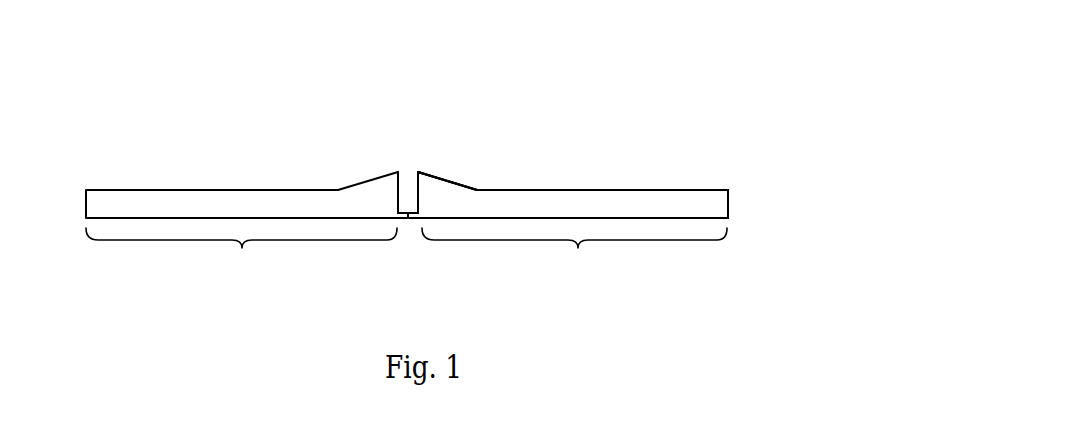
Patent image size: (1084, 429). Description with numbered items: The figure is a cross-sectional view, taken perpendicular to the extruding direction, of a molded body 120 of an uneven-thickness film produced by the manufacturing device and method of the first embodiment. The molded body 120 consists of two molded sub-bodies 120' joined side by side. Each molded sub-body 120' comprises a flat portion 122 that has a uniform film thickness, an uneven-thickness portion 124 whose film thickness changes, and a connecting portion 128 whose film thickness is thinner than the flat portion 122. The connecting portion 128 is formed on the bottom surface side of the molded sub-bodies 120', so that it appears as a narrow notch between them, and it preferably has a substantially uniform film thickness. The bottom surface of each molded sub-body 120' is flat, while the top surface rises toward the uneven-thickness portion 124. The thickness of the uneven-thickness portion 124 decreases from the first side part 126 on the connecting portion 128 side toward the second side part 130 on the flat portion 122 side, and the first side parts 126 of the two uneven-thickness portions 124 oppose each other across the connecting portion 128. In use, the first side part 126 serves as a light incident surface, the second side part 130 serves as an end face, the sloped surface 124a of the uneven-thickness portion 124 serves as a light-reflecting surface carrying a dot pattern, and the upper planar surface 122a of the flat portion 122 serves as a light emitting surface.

The molded body 120 is at (407, 112).
The molded sub-body 120' is at (406, 258).
The flat portion 122 is at (580, 202).
The upper planar surface of the flat portion 122a is at (663, 192).
The uneven-thickness portion 124 is at (435, 194).
The sloped surface 124a is at (457, 185).
The first side part 126 is at (418, 195).
The connecting portion 128 is at (408, 219).
The second side part 130 is at (728, 205).